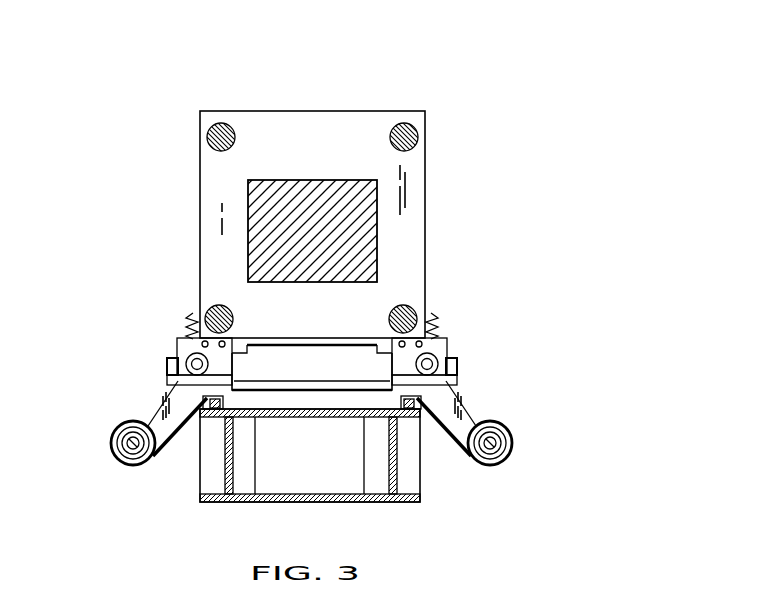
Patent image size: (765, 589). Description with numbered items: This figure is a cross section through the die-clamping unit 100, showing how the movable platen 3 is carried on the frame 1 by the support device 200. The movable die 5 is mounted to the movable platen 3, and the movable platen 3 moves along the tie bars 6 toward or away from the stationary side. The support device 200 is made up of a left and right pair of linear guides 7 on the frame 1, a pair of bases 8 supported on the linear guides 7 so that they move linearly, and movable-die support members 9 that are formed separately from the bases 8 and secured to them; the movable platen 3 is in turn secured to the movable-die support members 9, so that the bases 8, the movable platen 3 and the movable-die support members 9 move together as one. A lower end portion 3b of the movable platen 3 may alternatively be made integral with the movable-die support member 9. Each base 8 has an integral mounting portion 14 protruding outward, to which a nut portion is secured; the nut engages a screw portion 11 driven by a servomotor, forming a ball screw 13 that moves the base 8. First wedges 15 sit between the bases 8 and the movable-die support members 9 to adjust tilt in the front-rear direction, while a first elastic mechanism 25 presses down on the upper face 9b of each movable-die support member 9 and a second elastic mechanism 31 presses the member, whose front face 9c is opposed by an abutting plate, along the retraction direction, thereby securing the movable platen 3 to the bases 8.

The die-clamping unit 100 is at (353, 70).
The frame 1 is at (420, 492).
The movable platen 3 is at (418, 187).
The lower end portion 3b is at (386, 354).
The movable die 5 is at (248, 207).
The tie bars 6 is at (418, 136).
The linear guides 7 is at (210, 410).
The bases 8 is at (236, 381).
The movable-die support member 9 is at (178, 358).
The upper face 9b is at (178, 338).
The front face 9c is at (233, 346).
The screw portion 11 is at (133, 463).
The ball screws 13 is at (102, 455).
The mounting portions 14 is at (152, 412).
The first wedges 15 is at (170, 392).
The first elastic mechanism 25 is at (187, 316).
The second elastic mechanism 31 is at (196, 376).
The support device 200 is at (146, 371).